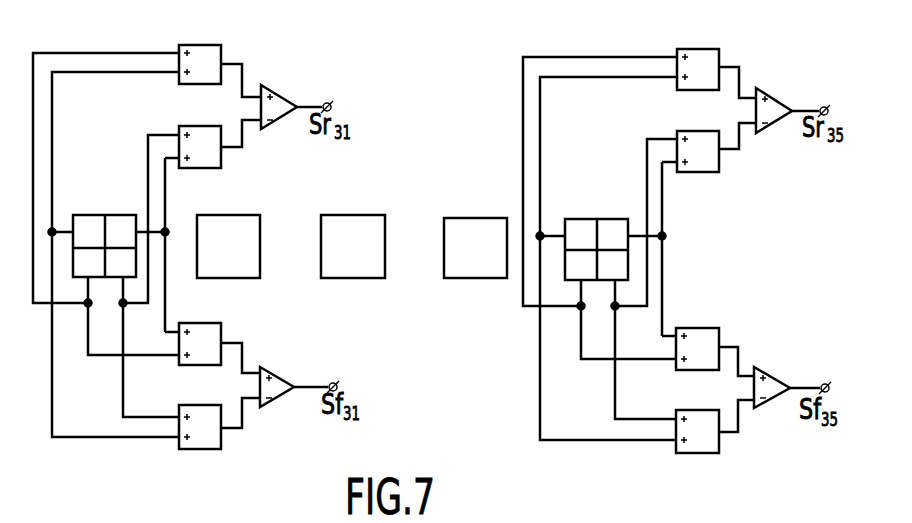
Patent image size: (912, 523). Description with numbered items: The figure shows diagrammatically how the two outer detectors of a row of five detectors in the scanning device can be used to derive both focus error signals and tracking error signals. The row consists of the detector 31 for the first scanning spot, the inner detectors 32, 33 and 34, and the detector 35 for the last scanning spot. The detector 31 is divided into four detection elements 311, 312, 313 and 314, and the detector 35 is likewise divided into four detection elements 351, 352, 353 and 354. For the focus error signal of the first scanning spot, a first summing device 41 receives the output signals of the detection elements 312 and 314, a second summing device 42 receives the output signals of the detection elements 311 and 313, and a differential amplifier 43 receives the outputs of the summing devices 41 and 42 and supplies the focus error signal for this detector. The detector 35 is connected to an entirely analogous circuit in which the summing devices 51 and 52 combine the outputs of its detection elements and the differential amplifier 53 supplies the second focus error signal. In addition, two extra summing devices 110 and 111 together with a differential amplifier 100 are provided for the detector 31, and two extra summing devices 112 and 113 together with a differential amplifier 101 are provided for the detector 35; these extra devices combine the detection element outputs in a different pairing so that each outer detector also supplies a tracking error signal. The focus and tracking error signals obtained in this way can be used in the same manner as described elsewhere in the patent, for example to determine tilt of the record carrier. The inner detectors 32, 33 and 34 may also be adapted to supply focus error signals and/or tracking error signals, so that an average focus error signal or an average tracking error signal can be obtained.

The detector 31 is at (97, 210).
The detection element 311 is at (94, 222).
The detection element 312 is at (120, 222).
The detection element 313 is at (123, 263).
The detection element 314 is at (85, 266).
The detector 32 is at (228, 215).
The detector 33 is at (351, 215).
The detector 34 is at (476, 218).
The detector 35 is at (591, 210).
The detection element 351 is at (581, 226).
The detection element 352 is at (615, 227).
The detection element 353 is at (613, 268).
The detection element 354 is at (580, 268).
The first summing device 41 is at (186, 366).
The second summing device 42 is at (193, 449).
The differential amplifier 43 is at (282, 377).
The summing device 51 is at (700, 328).
The summing device 52 is at (708, 453).
The differential amplifier 53 is at (763, 371).
The differential amplifier 100 is at (271, 90).
The differential amplifier 101 is at (772, 85).
The summing device 110 is at (199, 126).
The summing device 111 is at (199, 45).
The summing device 112 is at (699, 131).
The summing device 113 is at (699, 49).